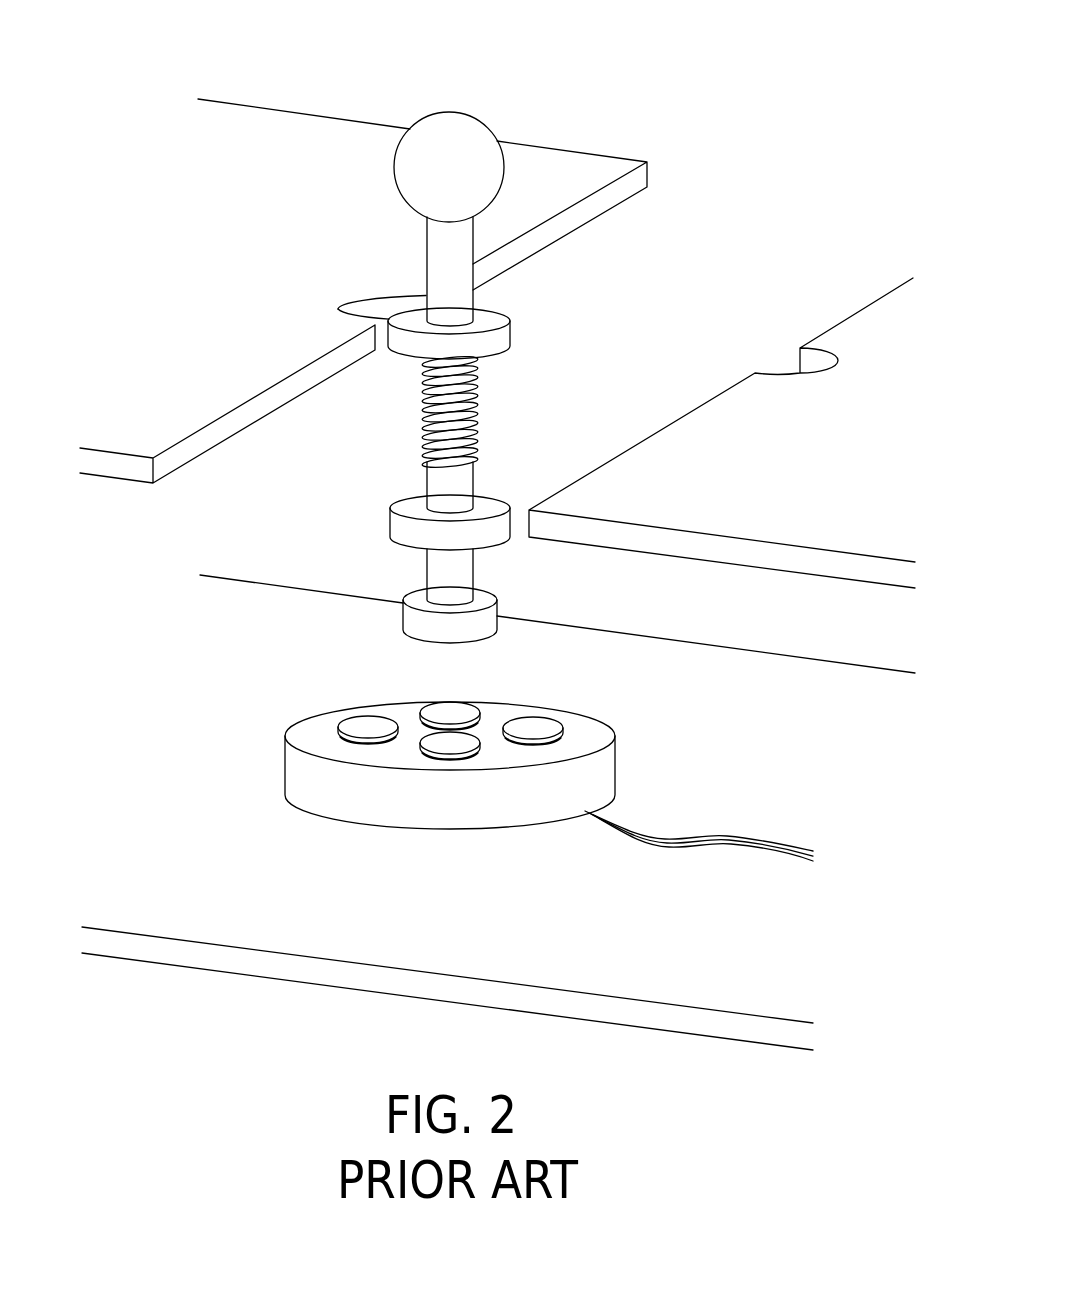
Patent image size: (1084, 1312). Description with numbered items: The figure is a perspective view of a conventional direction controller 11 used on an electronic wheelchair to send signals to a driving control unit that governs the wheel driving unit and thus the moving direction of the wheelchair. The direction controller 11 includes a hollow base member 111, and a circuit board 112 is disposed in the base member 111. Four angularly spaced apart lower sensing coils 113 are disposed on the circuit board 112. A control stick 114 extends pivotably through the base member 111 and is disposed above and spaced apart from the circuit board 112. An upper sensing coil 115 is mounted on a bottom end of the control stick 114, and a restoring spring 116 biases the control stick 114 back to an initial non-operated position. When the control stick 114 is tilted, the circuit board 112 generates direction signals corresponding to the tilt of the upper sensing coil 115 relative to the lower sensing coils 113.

The direction controller 11 is at (493, 343).
The hollow base member 111 is at (317, 123).
The circuit board 112 is at (487, 820).
The lower sensing coils 113 is at (453, 707).
The control stick 114 is at (470, 252).
The upper sensing coil 115 is at (402, 628).
The restoring spring 116 is at (478, 408).